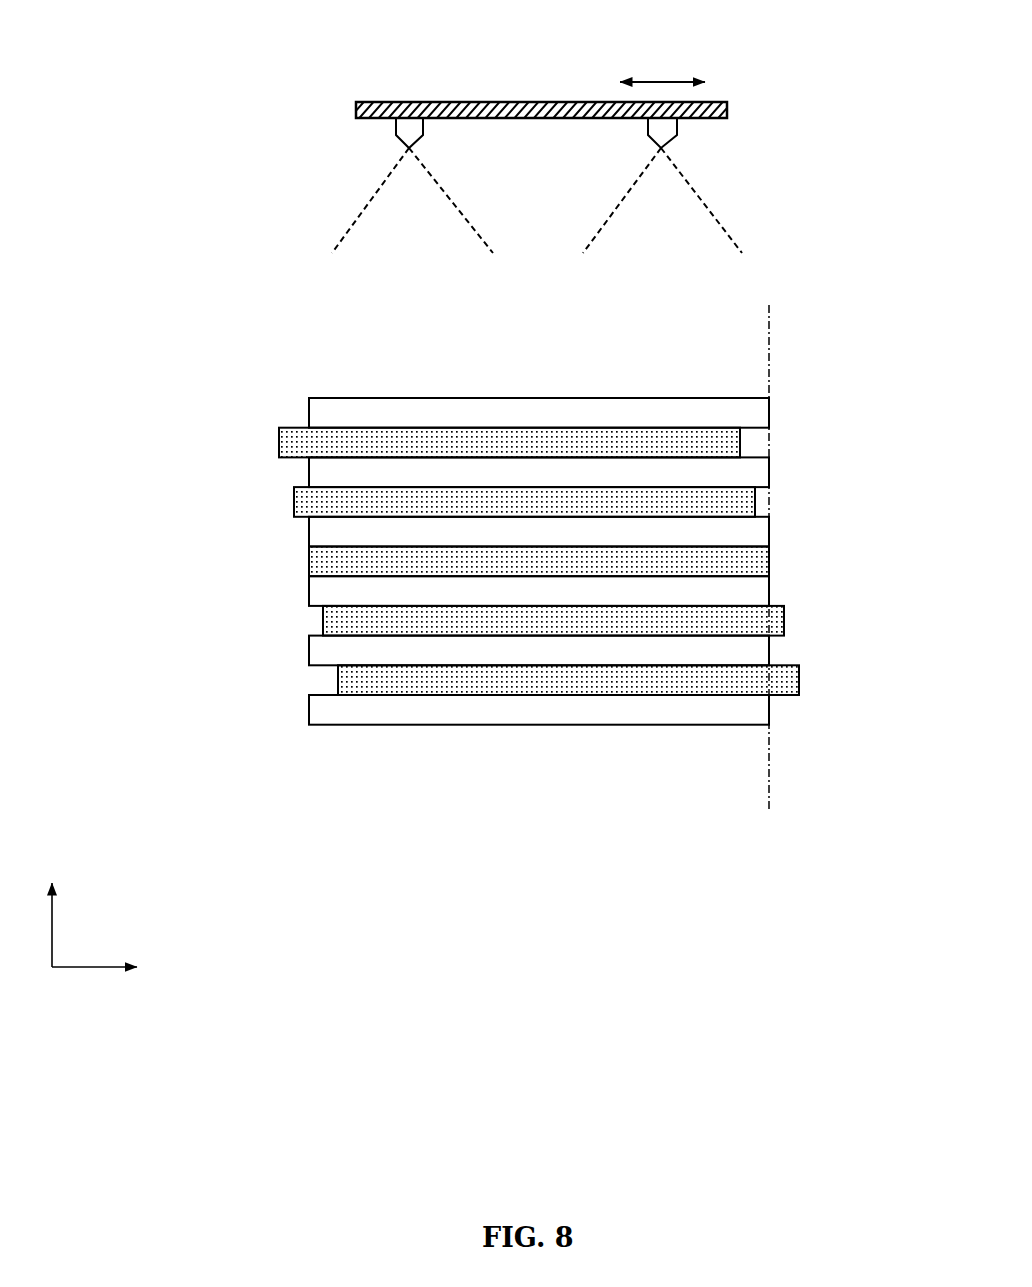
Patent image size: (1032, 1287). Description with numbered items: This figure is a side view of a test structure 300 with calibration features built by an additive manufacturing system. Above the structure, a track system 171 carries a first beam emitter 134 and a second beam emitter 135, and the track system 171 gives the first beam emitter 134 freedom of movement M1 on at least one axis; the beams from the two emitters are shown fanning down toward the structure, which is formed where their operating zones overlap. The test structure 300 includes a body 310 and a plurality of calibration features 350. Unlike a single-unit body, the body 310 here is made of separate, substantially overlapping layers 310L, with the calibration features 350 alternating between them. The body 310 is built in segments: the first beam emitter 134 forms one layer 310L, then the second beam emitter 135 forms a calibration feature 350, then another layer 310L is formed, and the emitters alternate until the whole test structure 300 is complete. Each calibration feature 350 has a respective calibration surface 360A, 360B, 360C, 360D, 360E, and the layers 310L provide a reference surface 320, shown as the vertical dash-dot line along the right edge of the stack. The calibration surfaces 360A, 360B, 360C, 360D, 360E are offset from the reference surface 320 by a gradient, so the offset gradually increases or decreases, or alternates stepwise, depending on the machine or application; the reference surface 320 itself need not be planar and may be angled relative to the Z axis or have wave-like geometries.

The test structure 300 is at (172, 162).
The track system 171 is at (463, 110).
The freedom of movement M1 is at (663, 82).
The first beam emitter 134 is at (415, 134).
The second beam emitter 135 is at (670, 135).
The reference surface 320 is at (770, 338).
The body 310 is at (477, 620).
The layers 310L is at (308, 707).
The calibration features 350 is at (608, 635).
The calibration surface 360A is at (740, 443).
The calibration surface 360B is at (755, 502).
The calibration surface 360C is at (769, 562).
The calibration surface 360D is at (784, 621).
The calibration surface 360E is at (799, 681).